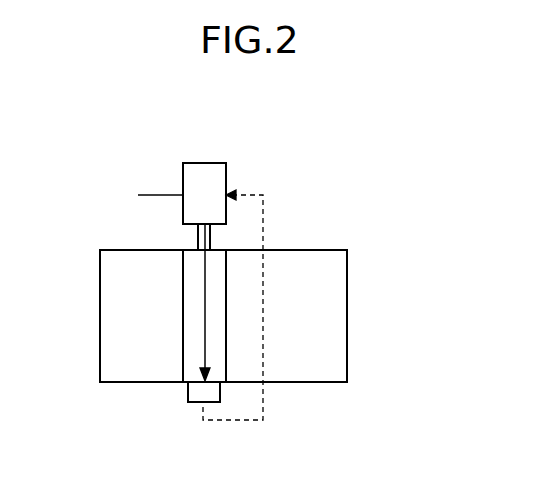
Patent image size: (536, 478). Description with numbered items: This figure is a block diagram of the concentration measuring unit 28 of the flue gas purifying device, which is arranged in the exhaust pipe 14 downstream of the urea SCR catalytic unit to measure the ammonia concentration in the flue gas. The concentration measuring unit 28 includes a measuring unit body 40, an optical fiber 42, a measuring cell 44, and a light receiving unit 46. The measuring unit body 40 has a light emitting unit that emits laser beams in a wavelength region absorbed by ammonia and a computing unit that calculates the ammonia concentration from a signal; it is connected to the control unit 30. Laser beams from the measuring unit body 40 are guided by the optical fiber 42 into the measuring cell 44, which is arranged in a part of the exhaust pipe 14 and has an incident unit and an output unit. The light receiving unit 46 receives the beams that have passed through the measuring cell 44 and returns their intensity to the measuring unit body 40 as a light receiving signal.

The concentration measuring unit 28 is at (297, 144).
The exhaust pipe 14 is at (133, 383).
The measuring cell 44 is at (183, 277).
The measuring unit body 40 is at (206, 163).
The control unit 30 is at (144, 183).
The optical fiber 42 is at (210, 236).
The light receiving unit 46 is at (191, 403).